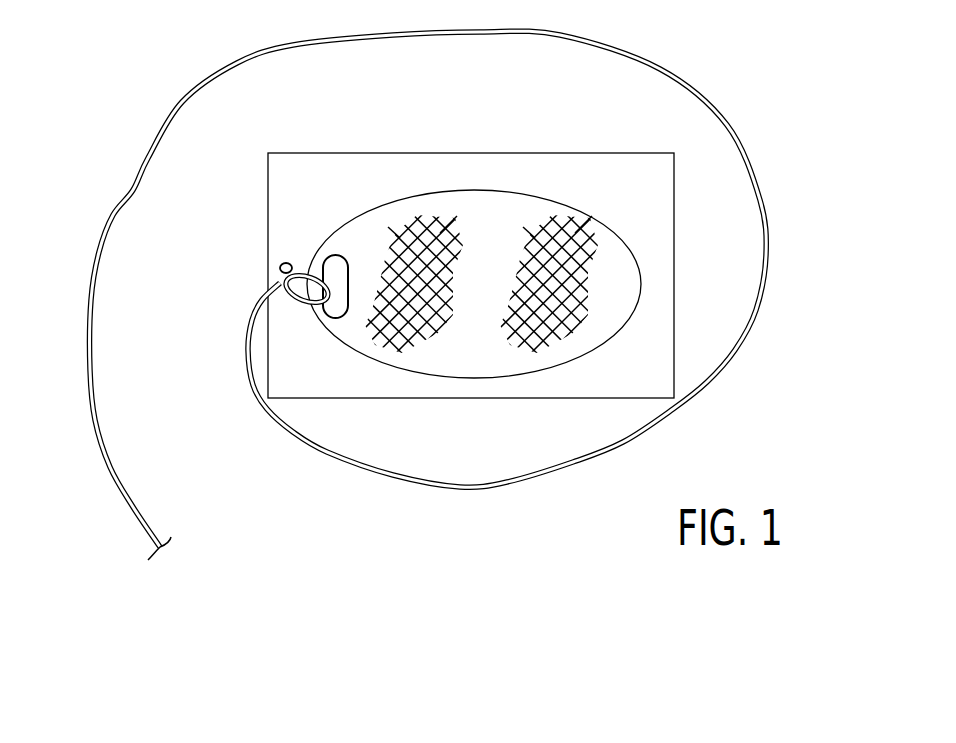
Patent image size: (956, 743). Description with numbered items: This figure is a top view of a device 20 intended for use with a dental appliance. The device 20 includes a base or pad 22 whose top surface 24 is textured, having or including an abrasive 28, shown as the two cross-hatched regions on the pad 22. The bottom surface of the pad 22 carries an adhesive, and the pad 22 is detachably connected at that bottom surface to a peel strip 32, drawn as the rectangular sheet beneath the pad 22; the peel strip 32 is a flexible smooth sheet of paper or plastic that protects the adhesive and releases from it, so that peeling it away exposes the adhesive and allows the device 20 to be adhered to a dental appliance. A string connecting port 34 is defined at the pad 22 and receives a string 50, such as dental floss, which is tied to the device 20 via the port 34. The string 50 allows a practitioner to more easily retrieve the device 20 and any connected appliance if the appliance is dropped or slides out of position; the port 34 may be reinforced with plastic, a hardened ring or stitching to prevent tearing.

The device 20 is at (776, 92).
The pad 22 is at (238, 205).
The top surface 24 is at (360, 230).
The abrasive 28 is at (577, 236).
The peel strip 32 is at (502, 170).
The string connecting port 34 is at (322, 325).
The string 50 is at (95, 292).